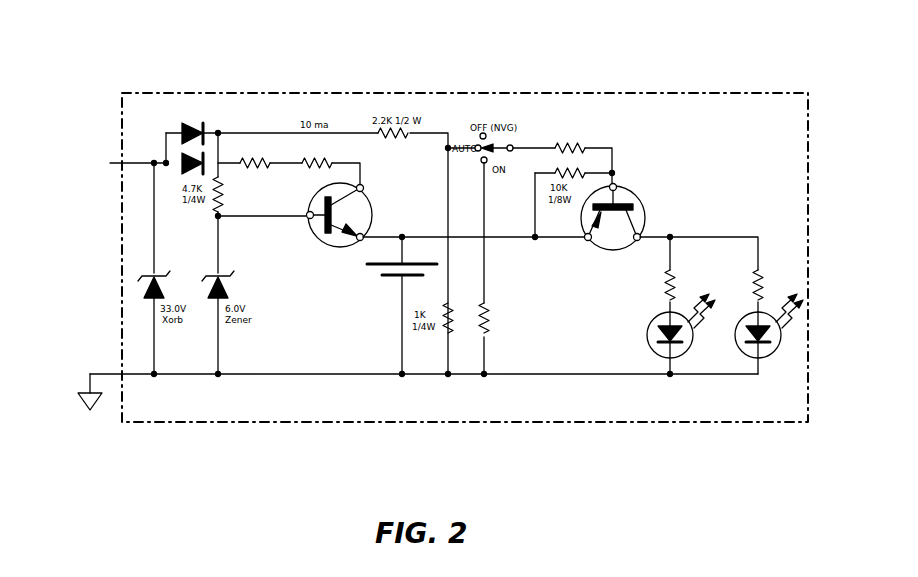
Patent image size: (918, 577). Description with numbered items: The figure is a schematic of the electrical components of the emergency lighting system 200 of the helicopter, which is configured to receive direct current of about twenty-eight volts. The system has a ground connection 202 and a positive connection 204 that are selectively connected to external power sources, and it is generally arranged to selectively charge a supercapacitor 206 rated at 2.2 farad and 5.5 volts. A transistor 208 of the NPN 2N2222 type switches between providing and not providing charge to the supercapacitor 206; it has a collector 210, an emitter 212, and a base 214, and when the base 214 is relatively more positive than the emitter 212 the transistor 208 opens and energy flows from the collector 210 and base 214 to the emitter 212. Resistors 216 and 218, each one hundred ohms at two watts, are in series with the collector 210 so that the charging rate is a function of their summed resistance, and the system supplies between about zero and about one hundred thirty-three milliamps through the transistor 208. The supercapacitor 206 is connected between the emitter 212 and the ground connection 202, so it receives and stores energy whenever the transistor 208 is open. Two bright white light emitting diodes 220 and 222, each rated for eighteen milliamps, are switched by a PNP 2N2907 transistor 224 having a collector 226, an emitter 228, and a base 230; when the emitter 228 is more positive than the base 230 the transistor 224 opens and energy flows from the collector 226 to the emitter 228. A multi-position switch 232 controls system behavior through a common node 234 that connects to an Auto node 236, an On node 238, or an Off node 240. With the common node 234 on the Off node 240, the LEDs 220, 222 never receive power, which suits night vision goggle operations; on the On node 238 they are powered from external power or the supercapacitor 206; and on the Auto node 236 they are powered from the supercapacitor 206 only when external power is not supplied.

The emergency lighting system 200 is at (732, 90).
The ground connection 202 is at (133, 374).
The positive connection 204 is at (136, 163).
The supercapacitor 206 is at (390, 276).
The transistor 208 is at (320, 250).
The collector 210 is at (362, 186).
The emitter 212 is at (357, 238).
The base 214 is at (306, 218).
The resistor 216 is at (258, 158).
The resistor 218 is at (318, 160).
The light emitting diode 220 is at (658, 358).
The light emitting diode 222 is at (762, 356).
The transistor 224 is at (638, 185).
The collector 226 is at (586, 240).
The emitter 228 is at (642, 236).
The base 230 is at (615, 184).
The multi-position switch 232 is at (507, 142).
The common node 234 is at (513, 146).
The Auto node 236 is at (477, 145).
The On node 238 is at (483, 163).
The Off node 240 is at (484, 133).